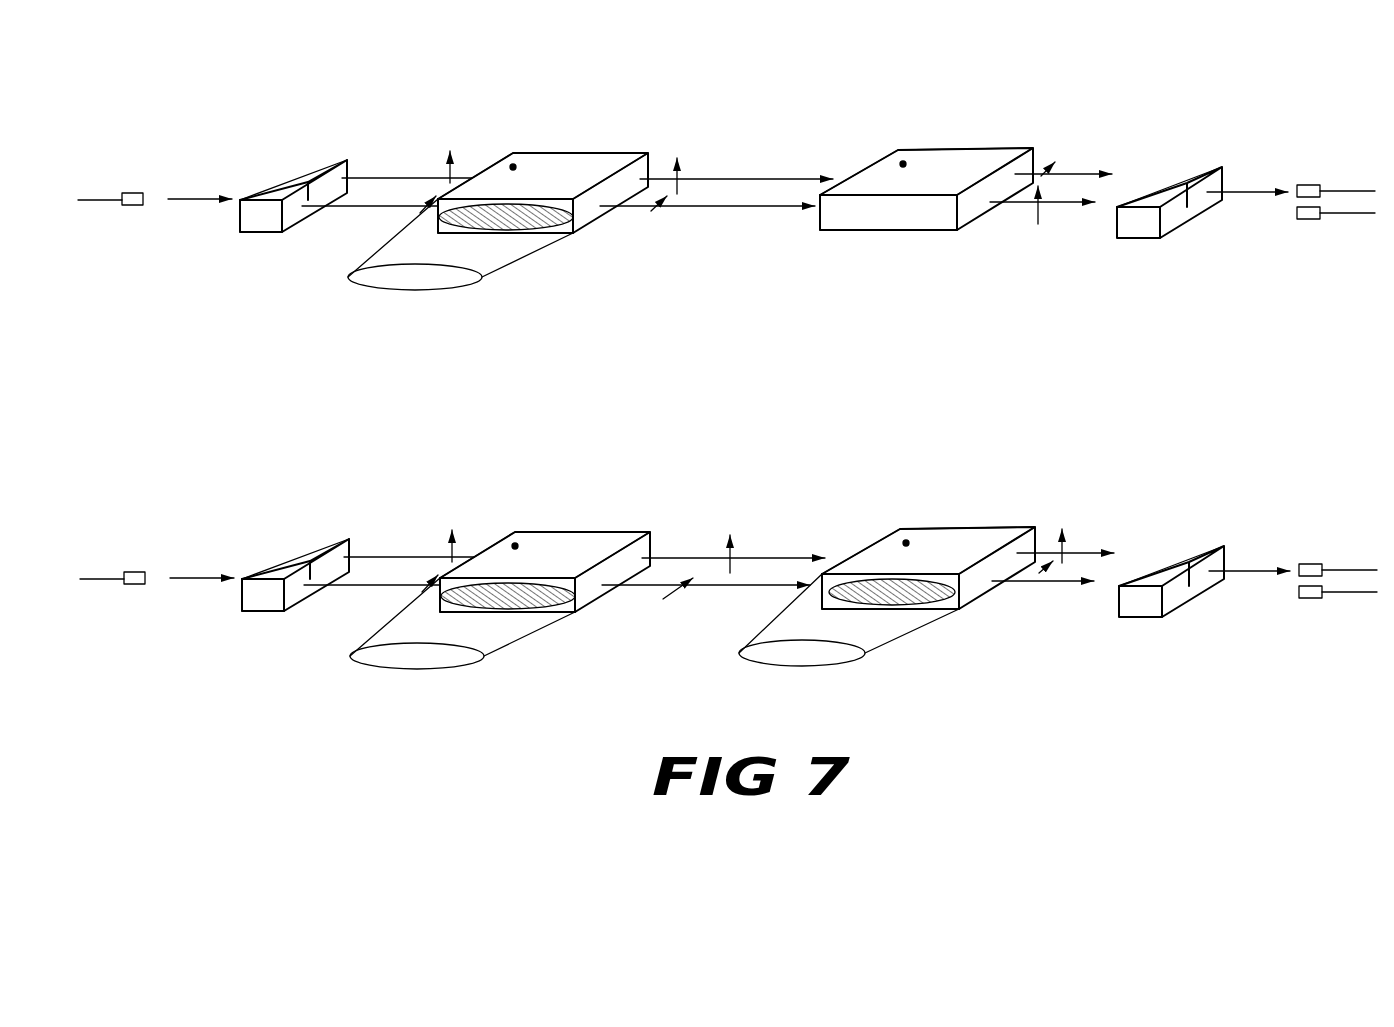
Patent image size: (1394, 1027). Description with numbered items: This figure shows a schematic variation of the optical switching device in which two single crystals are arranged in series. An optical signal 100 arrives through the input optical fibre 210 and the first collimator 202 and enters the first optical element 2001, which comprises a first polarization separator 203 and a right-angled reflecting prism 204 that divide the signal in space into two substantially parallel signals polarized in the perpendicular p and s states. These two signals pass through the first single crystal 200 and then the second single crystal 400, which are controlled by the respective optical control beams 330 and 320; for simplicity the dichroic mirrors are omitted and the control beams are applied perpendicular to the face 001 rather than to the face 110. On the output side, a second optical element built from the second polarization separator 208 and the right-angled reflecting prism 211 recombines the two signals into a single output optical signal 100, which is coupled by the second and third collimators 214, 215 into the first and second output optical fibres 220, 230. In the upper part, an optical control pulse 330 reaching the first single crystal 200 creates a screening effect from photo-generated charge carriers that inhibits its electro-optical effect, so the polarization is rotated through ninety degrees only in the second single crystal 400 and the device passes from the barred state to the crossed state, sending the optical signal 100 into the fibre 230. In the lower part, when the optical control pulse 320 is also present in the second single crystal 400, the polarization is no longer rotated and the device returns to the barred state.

The optical signal 100 is at (178, 203).
The face 110 is at (483, 168).
The face 001 is at (573, 234).
The first single crystal 200 is at (609, 142).
The second single crystal 400 is at (1006, 140).
The first collimator 202 is at (138, 194).
The first polarization separator 203 is at (270, 185).
The right-angled reflecting prism 204 is at (310, 180).
The second polarization separator 208 is at (1145, 192).
The input optical fibre 210 is at (92, 200).
The right-angled reflecting prism 211 is at (1187, 182).
The second collimator 214 is at (1303, 217).
The third collimator 215 is at (1305, 188).
The first output optical fibre 220 is at (1340, 191).
The second output optical fibre 230 is at (1342, 216).
The second optical control beam 320 is at (882, 628).
The optical control beam 330 is at (513, 246).
The first optical element 2001 is at (221, 262).